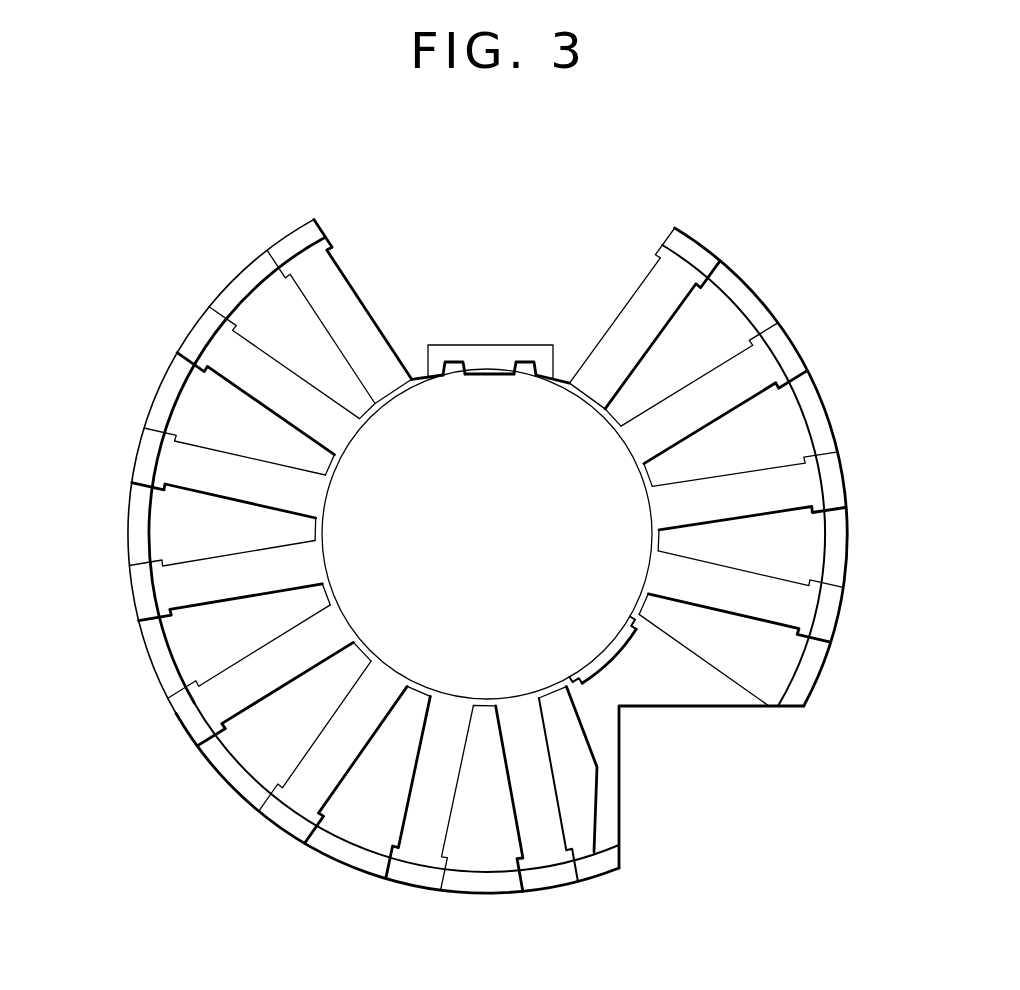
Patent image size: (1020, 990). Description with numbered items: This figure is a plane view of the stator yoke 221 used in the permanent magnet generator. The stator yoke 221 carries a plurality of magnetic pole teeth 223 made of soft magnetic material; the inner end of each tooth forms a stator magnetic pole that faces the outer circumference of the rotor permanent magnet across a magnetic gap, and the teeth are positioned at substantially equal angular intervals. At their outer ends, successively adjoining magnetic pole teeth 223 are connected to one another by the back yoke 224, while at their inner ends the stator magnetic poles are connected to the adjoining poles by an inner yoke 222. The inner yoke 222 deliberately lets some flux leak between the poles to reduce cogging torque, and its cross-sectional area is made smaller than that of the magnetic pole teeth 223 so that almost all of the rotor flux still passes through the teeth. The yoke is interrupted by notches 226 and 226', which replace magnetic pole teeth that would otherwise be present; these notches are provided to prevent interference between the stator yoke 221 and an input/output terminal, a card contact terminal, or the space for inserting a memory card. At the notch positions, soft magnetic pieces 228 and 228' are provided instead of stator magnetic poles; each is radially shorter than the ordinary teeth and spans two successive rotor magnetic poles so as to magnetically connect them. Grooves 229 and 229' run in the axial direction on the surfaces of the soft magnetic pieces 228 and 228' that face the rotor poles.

The stator yoke 221 is at (779, 181).
The inner yoke 222 is at (313, 537).
The magnetic pole teeth 223 is at (277, 393).
The back yoke 224 is at (243, 283).
The notch 226 is at (517, 276).
The notch 226' is at (692, 784).
The soft magnetic piece 228 is at (491, 266).
The soft magnetic piece 228' is at (740, 671).
The grooves 229 is at (521, 271).
The grooves 229' is at (692, 704).